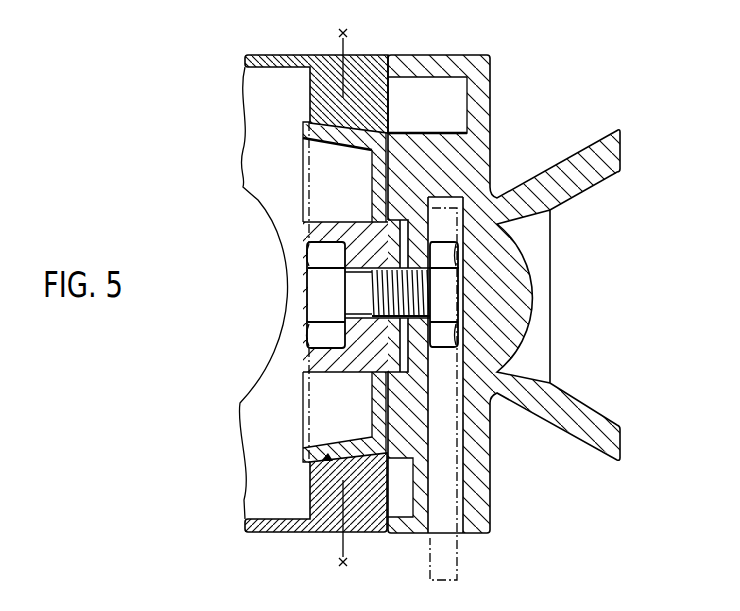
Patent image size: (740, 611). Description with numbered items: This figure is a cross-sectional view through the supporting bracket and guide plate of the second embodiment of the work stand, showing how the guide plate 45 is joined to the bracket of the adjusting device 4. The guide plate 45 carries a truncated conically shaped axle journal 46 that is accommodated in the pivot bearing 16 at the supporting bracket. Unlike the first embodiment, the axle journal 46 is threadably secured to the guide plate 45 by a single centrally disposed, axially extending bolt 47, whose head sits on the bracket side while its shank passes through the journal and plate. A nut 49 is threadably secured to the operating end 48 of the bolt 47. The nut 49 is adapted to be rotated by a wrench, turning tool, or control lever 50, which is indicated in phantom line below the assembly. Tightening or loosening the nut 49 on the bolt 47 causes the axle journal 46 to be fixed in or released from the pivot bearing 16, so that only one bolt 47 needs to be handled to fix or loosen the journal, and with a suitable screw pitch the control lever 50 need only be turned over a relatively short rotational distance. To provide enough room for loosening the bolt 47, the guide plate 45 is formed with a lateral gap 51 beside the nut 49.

The adjusting device 4 is at (270, 447).
The pivot bearing 16 is at (325, 460).
The guide plate 45 is at (475, 135).
The axle journal 46 is at (333, 172).
The bolt 47 is at (322, 278).
The operating end 48 is at (458, 280).
The nut 49 is at (443, 305).
The control lever 50 is at (447, 552).
The lateral gap 51 is at (433, 453).